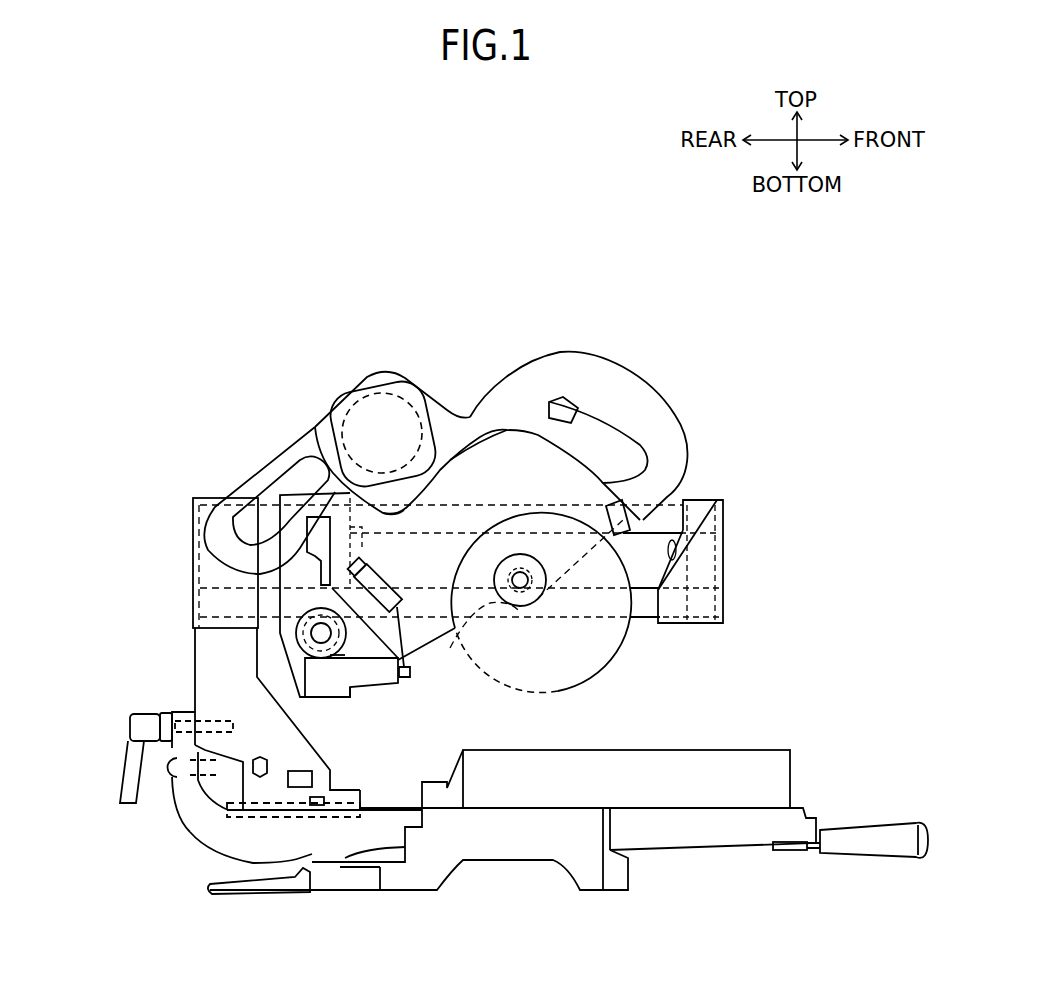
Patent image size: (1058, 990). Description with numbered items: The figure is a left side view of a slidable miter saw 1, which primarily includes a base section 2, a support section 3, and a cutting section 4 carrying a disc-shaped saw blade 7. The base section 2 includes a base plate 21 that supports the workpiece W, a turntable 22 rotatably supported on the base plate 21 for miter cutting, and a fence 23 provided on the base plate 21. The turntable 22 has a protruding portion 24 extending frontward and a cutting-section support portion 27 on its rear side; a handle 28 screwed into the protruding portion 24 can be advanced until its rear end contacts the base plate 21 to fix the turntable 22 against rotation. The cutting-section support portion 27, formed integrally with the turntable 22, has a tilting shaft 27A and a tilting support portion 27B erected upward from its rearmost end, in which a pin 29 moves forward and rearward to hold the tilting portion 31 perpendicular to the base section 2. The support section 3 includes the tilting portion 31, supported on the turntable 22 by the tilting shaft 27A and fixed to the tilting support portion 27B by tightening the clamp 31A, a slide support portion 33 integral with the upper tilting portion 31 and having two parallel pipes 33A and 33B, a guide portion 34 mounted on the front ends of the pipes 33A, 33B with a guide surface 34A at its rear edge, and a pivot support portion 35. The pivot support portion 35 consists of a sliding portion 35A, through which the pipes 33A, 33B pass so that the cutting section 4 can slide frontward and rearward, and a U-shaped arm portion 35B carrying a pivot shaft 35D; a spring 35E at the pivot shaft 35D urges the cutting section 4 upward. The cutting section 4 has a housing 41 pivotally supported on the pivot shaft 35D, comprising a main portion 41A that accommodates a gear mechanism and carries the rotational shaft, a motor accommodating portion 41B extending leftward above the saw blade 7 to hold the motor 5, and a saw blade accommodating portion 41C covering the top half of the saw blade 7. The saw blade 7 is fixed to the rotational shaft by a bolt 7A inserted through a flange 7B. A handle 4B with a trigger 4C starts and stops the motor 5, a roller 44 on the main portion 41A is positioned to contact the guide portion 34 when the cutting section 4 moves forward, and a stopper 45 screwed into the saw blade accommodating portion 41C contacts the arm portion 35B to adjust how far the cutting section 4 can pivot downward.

The miter saw 1 is at (815, 362).
The base section 2 is at (590, 903).
The support section 3 is at (162, 881).
The cutting section 4 is at (628, 335).
The handle 4B is at (678, 413).
The trigger 4C is at (562, 400).
The motor 5 is at (333, 413).
The saw blade 7 is at (596, 652).
The bolt 7A is at (528, 590).
The flange 7B is at (540, 595).
The base plate 21 is at (460, 845).
The turntable 22 is at (322, 840).
The fence 23 is at (447, 782).
The protruding portion 24 is at (686, 835).
The cutting-section support portion 27 is at (200, 823).
The tilting shaft 27A is at (277, 810).
The tilting support portion 27B is at (177, 813).
The handle 28 is at (922, 845).
The pin 29 is at (166, 767).
The tilting portion 31 is at (284, 742).
The clamp 31A is at (133, 727).
The slide support portion 33 is at (205, 500).
The pipe 33A is at (265, 522).
The pipe 33B is at (270, 613).
The guide portion 34 is at (717, 575).
The guide surface 34A is at (717, 500).
The pivot support portion 35 is at (313, 580).
The sliding portion 35A is at (300, 597).
The arm portion 35B is at (303, 662).
The pivot shaft 35D is at (297, 633).
The spring 35E is at (333, 650).
The housing 41 is at (474, 437).
The main portion 41A is at (403, 497).
The motor accommodating portion 41B is at (393, 390).
The saw blade accommodating portion 41C is at (547, 447).
The roller 44 is at (308, 468).
The stopper 45 is at (412, 675).
The workpiece W is at (695, 768).